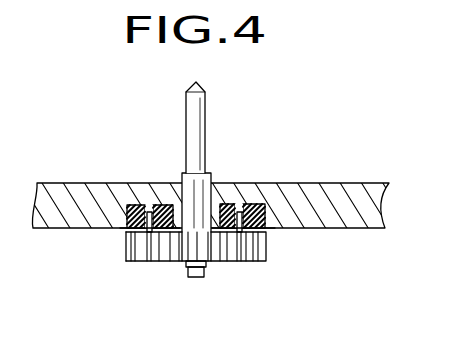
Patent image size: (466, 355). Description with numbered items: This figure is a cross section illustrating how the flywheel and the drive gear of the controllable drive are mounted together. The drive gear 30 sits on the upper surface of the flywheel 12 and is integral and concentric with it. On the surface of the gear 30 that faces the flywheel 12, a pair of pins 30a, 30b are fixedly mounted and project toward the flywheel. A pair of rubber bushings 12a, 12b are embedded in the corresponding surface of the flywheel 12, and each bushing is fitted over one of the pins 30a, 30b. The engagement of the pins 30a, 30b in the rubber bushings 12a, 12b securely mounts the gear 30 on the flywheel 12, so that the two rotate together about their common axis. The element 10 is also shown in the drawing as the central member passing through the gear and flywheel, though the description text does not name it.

The pin 10 is at (205, 112).
The flywheel 12 is at (330, 183).
The rubber bushing 12a is at (120, 228).
The rubber bushing 12b is at (277, 230).
The drive gear 30 is at (167, 253).
The pin 30a is at (146, 205).
The pin 30b is at (242, 204).